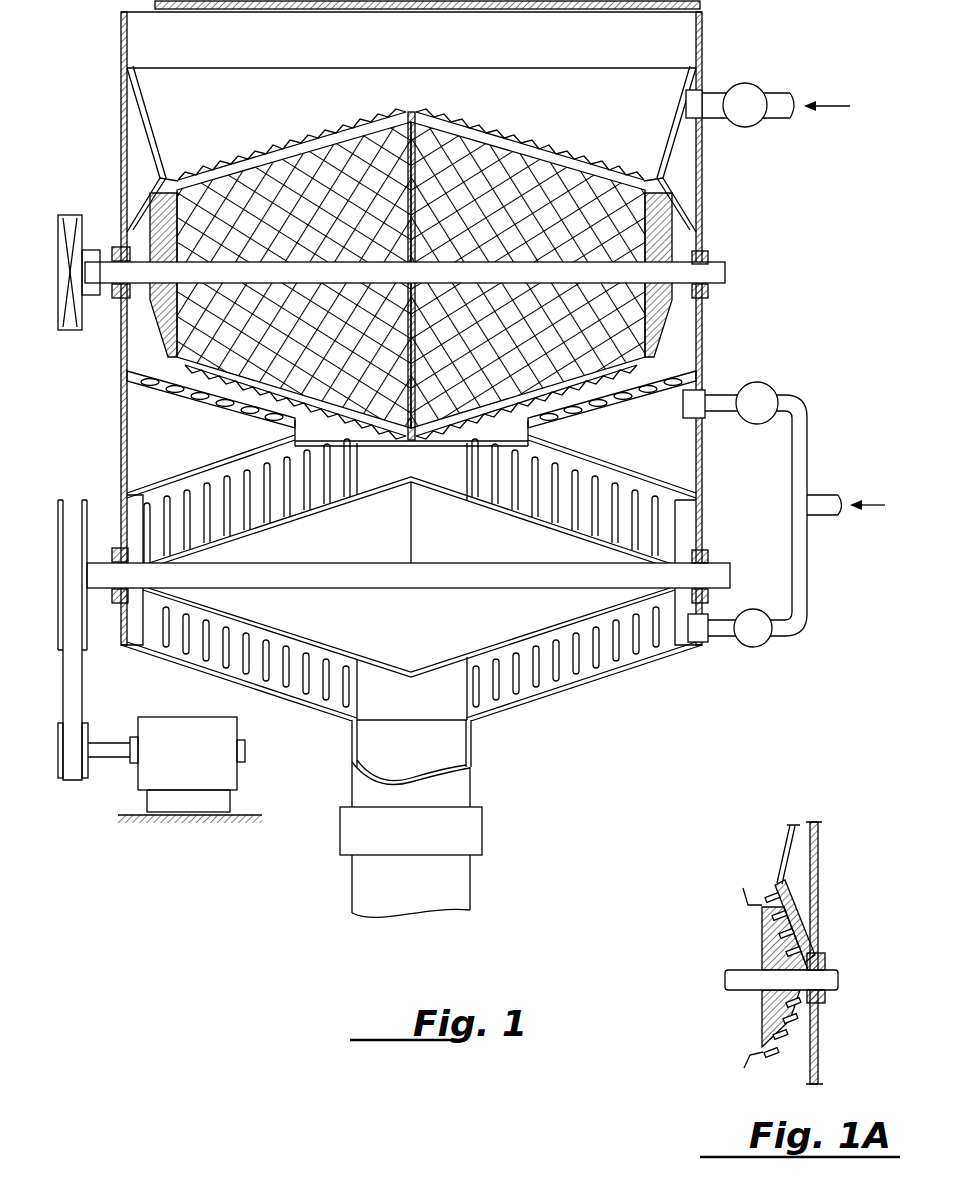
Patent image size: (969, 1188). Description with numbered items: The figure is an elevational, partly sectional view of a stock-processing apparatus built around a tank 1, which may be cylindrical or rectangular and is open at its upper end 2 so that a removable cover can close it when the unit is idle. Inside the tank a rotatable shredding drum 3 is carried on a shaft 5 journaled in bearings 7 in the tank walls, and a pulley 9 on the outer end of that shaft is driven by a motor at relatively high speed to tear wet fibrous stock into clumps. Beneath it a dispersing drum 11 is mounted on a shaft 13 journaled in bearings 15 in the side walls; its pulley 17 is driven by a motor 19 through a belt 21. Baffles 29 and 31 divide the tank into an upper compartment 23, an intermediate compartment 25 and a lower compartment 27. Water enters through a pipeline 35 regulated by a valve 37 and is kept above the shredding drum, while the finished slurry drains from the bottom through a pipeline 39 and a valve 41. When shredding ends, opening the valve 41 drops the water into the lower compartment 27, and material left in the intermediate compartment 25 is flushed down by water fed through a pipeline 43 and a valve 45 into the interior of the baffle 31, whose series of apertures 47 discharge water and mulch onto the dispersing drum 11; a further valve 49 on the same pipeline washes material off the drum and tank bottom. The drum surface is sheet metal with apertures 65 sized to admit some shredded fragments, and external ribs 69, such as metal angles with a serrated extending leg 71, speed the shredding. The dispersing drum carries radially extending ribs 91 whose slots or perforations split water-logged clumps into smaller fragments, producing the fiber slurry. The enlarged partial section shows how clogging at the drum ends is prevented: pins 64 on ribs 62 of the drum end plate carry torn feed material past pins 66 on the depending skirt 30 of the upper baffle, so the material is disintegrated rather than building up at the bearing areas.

In FIG. 1, the tank 1 is at (710, 44).
In FIG. 1A, the tank 1 is at (826, 853).
In FIG. 1, the open upper end 2 is at (312, 12).
In FIG. 1, the shredding drum 3 is at (670, 213).
In FIG. 1, the shaft 5 is at (730, 270).
In FIG. 1A, the shaft 5 is at (835, 982).
In FIG. 1, the bearings 7 is at (115, 247).
In FIG. 1A, the bearings 7 is at (816, 955).
In FIG. 1, the pulley 9 is at (60, 233).
In FIG. 1, the dispersing drum 11 is at (672, 553).
In FIG. 1, the shaft 13 is at (490, 580).
In FIG. 1, the bearings 15 is at (118, 604).
In FIG. 1, the pulley 17 is at (62, 548).
In FIG. 1, the motor 19 is at (215, 780).
In FIG. 1, the belt 21 is at (68, 694).
In FIG. 1, the upper compartment 23 is at (165, 100).
In FIG. 1, the intermediate compartment 25 is at (140, 340).
In FIG. 1, the lower compartment 27 is at (130, 502).
In FIG. 1, the baffle 29 is at (148, 135).
In FIG. 1A, the baffle 29 is at (785, 845).
In FIG. 1A, the depending skirt 30 is at (793, 905).
In FIG. 1, the baffle 31 is at (168, 453).
In FIG. 1, the pipeline 35 is at (728, 93).
In FIG. 1, the valve 37 is at (775, 118).
In FIG. 1, the pipeline 39 is at (360, 890).
In FIG. 1, the valve 41 is at (470, 826).
In FIG. 1, the pipeline 43 is at (812, 497).
In FIG. 1, the valve 45 is at (770, 392).
In FIG. 1, the apertures 47 is at (185, 395).
In FIG. 1, the valve 49 is at (757, 648).
In FIG. 1A, the ribs 62 is at (775, 945).
In FIG. 1A, the pins 64 is at (790, 1040).
In FIG. 1, the apertures 65 is at (478, 190).
In FIG. 1A, the pins 66 is at (765, 895).
In FIG. 1, the external ribs 69 is at (282, 170).
In FIG. 1, the extending leg 71 is at (275, 140).
In FIG. 1, the ribs 91 is at (218, 490).